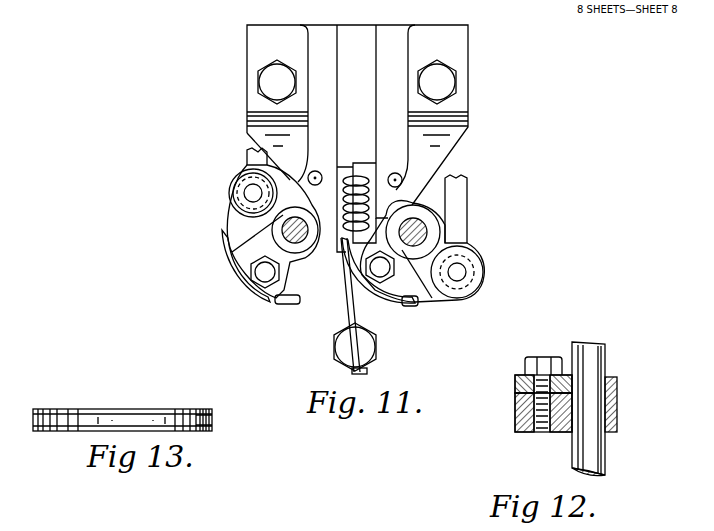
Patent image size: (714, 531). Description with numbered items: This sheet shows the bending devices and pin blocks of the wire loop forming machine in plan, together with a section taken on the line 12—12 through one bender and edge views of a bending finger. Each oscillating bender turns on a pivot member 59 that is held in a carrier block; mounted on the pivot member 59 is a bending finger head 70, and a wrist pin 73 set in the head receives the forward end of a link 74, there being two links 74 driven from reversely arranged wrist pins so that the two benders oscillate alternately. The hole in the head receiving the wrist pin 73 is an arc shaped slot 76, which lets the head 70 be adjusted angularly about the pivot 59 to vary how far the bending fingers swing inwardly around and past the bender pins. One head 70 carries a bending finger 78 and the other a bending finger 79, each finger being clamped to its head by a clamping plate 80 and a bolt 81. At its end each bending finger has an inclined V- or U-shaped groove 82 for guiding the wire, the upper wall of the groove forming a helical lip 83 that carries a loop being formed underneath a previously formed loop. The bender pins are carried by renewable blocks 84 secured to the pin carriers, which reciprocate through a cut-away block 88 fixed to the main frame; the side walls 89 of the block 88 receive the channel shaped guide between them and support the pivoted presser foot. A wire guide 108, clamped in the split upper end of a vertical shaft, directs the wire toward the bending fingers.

In FIG. 11, the pivot pin 12 is at (262, 280).
In FIG. 12, the pivot member 59 is at (593, 452).
In FIG. 11, the bending finger head 70 is at (222, 236).
In FIG. 12, the bending finger head 70 is at (618, 401).
In FIG. 11, the wrist pin 73 is at (252, 195).
In FIG. 11, the link 74 is at (244, 156).
In FIG. 11, the arc shaped slot 76 is at (253, 182).
In FIG. 11, the bending finger 78 is at (286, 305).
In FIG. 12, the bending finger 78 is at (520, 395).
In FIG. 13, the bending finger 78 is at (98, 408).
In FIG. 11, the bending finger 79 is at (412, 306).
In FIG. 11, the clamping plate 80 is at (240, 258).
In FIG. 12, the clamping plate 80 is at (520, 377).
In FIG. 11, the bolt 81 is at (276, 275).
In FIG. 12, the bolt 81 is at (543, 357).
In FIG. 13, the groove 82 is at (212, 419).
In FIG. 13, the helical lip 83 is at (206, 409).
In FIG. 11, the renewable block 84 is at (365, 163).
In FIG. 11, the block 88 is at (357, 69).
In FIG. 11, the side wall 89 is at (388, 81).
In FIG. 11, the wire guide 108 is at (340, 323).